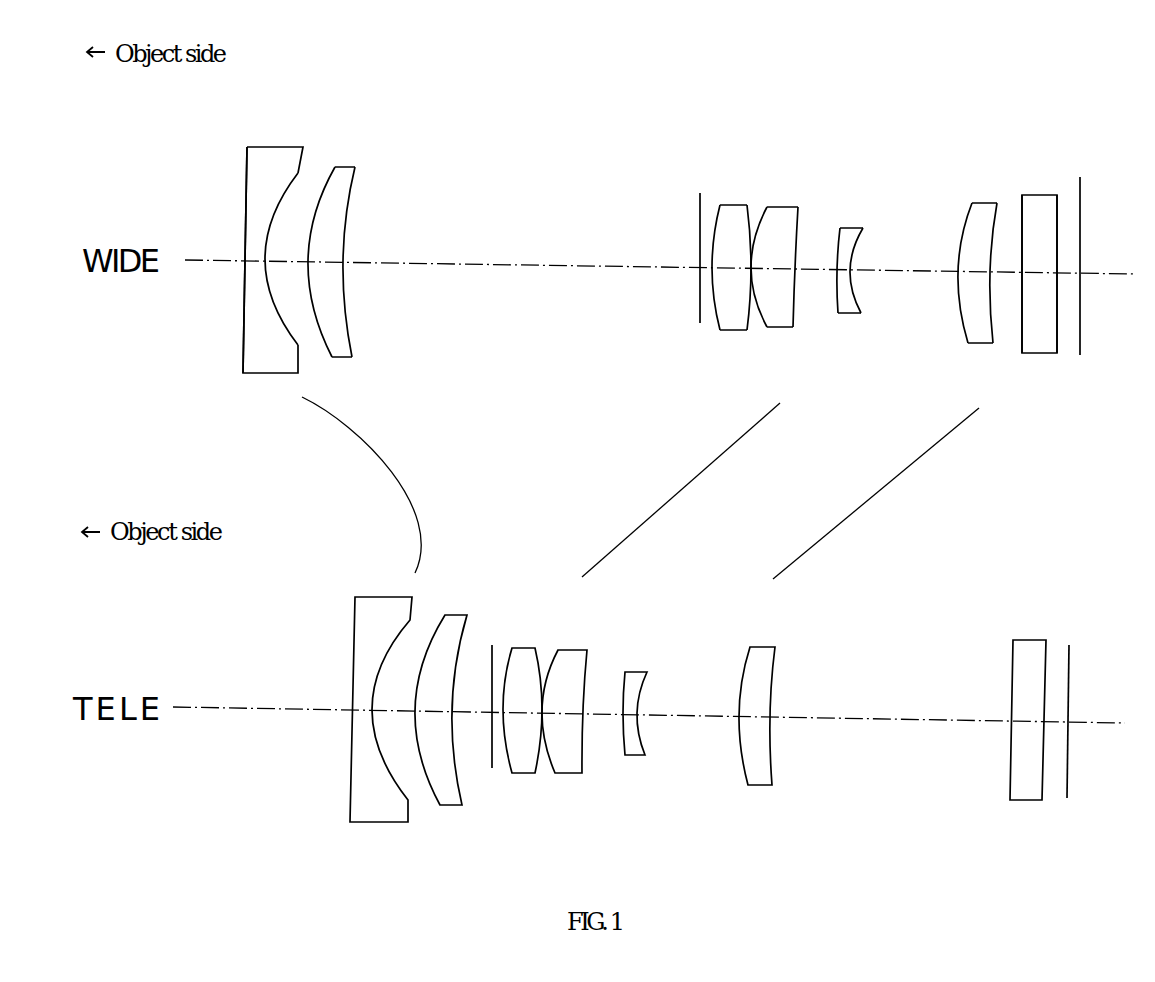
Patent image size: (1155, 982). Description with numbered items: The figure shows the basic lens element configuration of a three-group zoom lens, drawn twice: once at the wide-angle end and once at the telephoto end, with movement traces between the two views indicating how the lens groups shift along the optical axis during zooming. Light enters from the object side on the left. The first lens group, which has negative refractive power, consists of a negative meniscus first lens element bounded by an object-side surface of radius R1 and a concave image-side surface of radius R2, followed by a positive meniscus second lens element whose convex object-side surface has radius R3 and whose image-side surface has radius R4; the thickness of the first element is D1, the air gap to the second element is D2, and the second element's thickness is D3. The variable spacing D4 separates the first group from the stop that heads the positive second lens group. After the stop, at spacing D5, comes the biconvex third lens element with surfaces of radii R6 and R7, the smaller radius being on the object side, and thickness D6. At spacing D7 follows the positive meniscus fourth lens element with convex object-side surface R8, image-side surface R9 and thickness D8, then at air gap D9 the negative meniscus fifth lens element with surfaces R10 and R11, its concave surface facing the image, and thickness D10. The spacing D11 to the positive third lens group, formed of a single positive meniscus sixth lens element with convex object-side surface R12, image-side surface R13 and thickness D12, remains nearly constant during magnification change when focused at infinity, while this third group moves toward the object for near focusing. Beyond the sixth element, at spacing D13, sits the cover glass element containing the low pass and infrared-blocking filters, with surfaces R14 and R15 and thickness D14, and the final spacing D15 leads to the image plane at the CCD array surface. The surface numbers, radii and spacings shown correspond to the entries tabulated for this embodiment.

The radius of curvature of first surface R1 is at (243, 187).
The radius of curvature of second surface R2 is at (281, 216).
The radius of curvature of third surface R3 is at (320, 196).
The radius of curvature of fourth surface R4 is at (356, 211).
The radius of curvature of sixth surface R6 is at (718, 221).
The radius of curvature of seventh surface R7 is at (751, 220).
The radius of curvature of eighth surface R8 is at (758, 222).
The radius of curvature of ninth surface R9 is at (798, 220).
The radius of curvature of tenth surface R10 is at (839, 244).
The radius of curvature of eleventh surface R11 is at (860, 237).
The radius of curvature of twelfth surface R12 is at (961, 241).
The radius of curvature of thirteenth surface R13 is at (993, 238).
The radius of curvature of fourteenth surface R14 is at (1024, 213).
The radius of curvature of fifteenth surface R15 is at (1059, 231).
The on-axis surface spacing D1 is at (250, 260).
The on-axis surface spacing D2 is at (287, 251).
The on-axis surface spacing D3 is at (325, 251).
The on-axis surface spacing D4 is at (449, 251).
The on-axis surface spacing D5 is at (706, 232).
The on-axis surface spacing D6 is at (732, 261).
The on-axis surface spacing D7 is at (750, 280).
The on-axis surface spacing D8 is at (775, 261).
The on-axis surface spacing D9 is at (817, 261).
The on-axis surface spacing D10 is at (841, 280).
The on-axis surface spacing D11 is at (909, 261).
The on-axis surface spacing D12 is at (972, 261).
The on-axis surface spacing D13 is at (1006, 261).
The on-axis surface spacing D14 is at (1038, 261).
The on-axis surface spacing D15 is at (1066, 276).